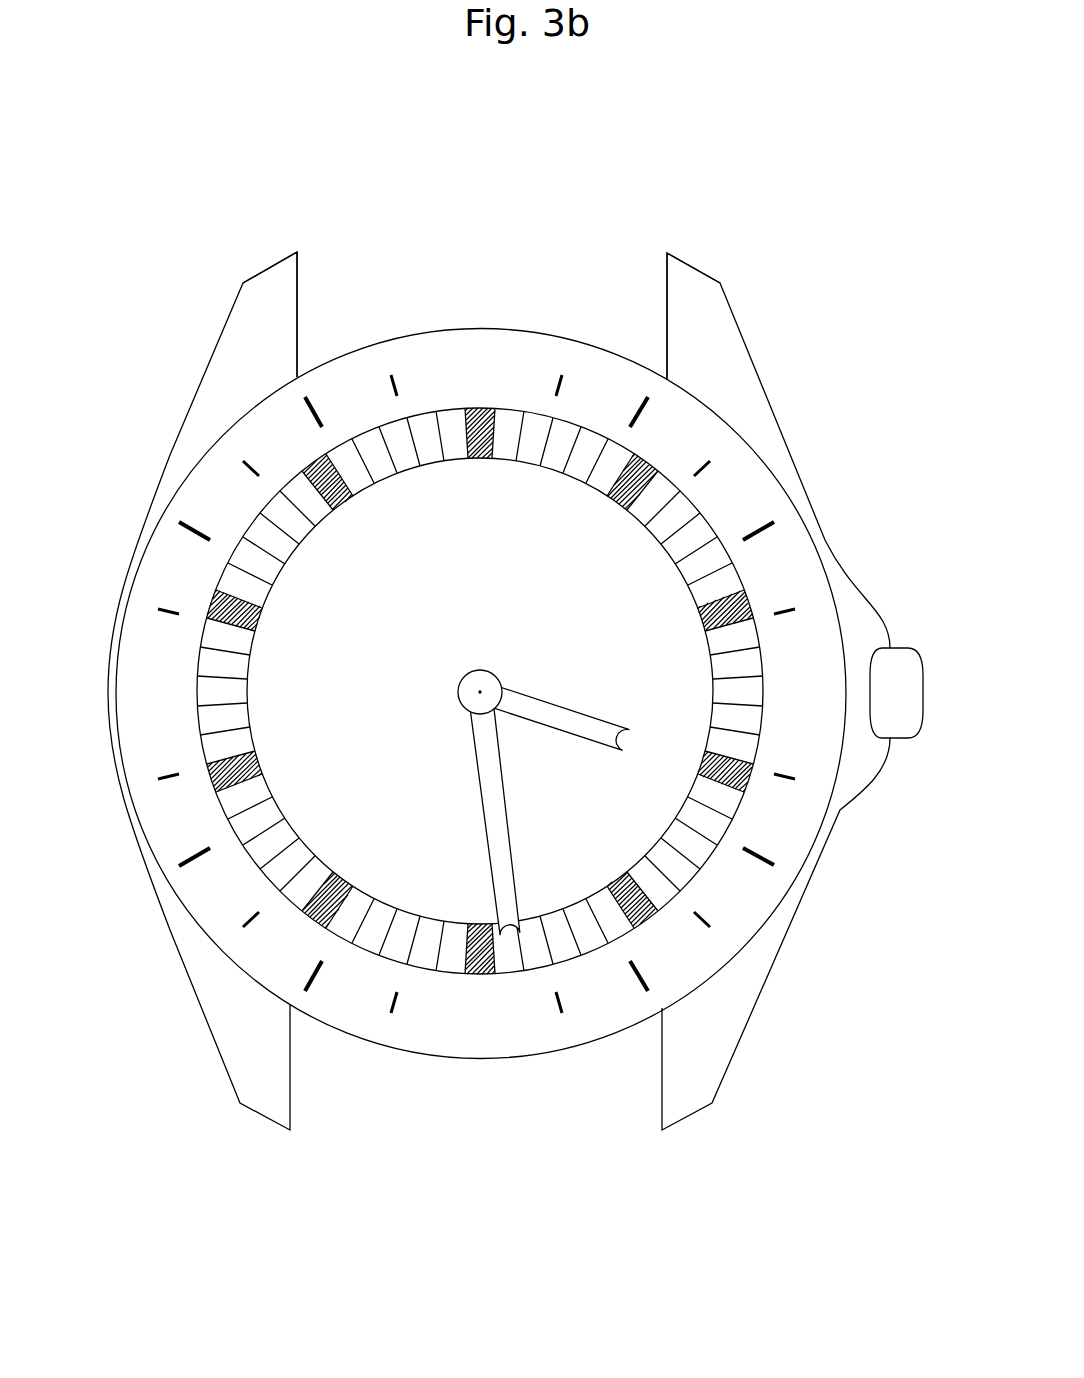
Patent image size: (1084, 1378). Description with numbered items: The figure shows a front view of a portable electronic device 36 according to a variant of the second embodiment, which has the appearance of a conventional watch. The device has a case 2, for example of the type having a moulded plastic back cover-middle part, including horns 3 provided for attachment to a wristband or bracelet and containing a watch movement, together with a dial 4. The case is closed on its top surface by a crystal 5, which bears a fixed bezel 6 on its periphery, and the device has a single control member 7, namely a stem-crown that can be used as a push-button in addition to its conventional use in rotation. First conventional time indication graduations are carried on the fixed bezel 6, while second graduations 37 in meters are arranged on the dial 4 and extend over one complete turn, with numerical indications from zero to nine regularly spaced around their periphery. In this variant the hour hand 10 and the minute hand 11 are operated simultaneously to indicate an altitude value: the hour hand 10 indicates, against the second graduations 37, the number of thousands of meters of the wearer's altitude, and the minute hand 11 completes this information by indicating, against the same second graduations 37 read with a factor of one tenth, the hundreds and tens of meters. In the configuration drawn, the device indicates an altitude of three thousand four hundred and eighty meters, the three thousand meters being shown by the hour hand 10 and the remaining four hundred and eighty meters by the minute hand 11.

The case 2 is at (853, 587).
The horns 3 is at (280, 297).
The dial 4 is at (650, 573).
The crystal 5 is at (265, 670).
The fixed bezel 6 is at (840, 825).
The control member 7 is at (900, 670).
The hour hand 10 is at (592, 735).
The minute hand 11 is at (495, 815).
The device 36 is at (508, 746).
The second graduations 37 is at (420, 957).